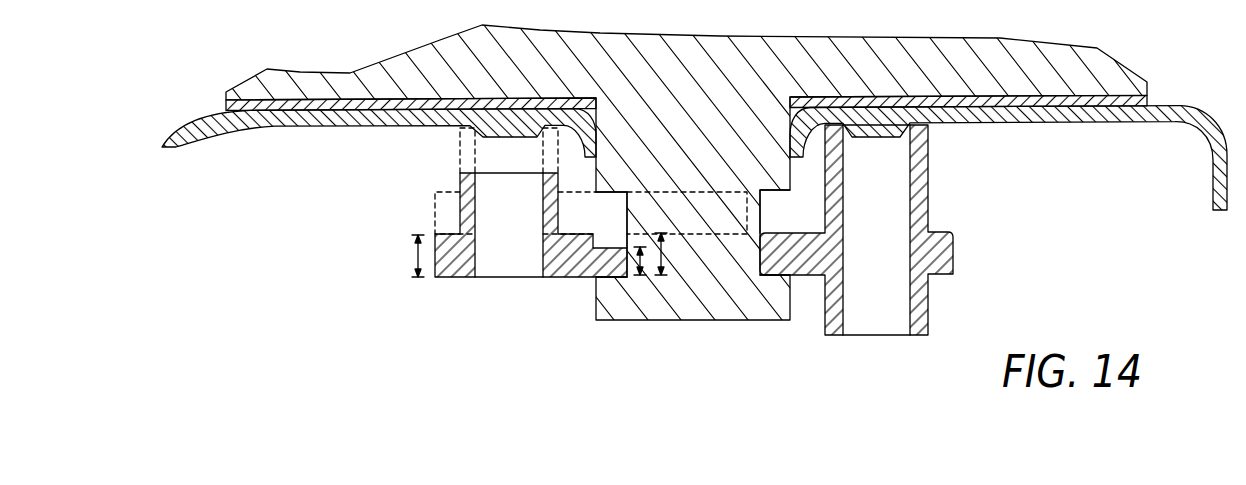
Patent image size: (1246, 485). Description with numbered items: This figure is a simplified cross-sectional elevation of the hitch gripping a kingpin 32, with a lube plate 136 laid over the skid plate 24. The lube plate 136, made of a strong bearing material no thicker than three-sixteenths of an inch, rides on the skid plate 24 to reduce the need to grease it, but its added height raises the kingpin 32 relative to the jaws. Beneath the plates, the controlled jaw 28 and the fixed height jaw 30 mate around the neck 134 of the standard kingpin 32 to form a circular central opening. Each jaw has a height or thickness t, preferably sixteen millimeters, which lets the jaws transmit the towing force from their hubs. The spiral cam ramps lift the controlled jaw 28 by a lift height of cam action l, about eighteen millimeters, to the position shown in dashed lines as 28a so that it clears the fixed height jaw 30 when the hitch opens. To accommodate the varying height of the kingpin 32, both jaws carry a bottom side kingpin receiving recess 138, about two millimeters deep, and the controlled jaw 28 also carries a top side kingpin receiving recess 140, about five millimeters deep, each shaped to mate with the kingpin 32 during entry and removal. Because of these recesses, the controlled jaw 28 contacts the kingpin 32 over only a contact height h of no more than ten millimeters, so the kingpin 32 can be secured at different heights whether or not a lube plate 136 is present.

The skid plate 24 is at (291, 127).
The lube plate 136 is at (358, 111).
The controlled jaw 28 is at (450, 278).
The raised position of controlled jaw 28a is at (437, 193).
The fixed height jaw 30 is at (955, 247).
The kingpin 32 is at (640, 321).
The neck 134 is at (760, 272).
The bottom side kingpin receiving recess 138 is at (597, 279).
The top side kingpin receiving recess 140 is at (612, 247).
The contact height h is at (645, 257).
The lift height of cam action l is at (667, 258).
The thickness t is at (415, 262).